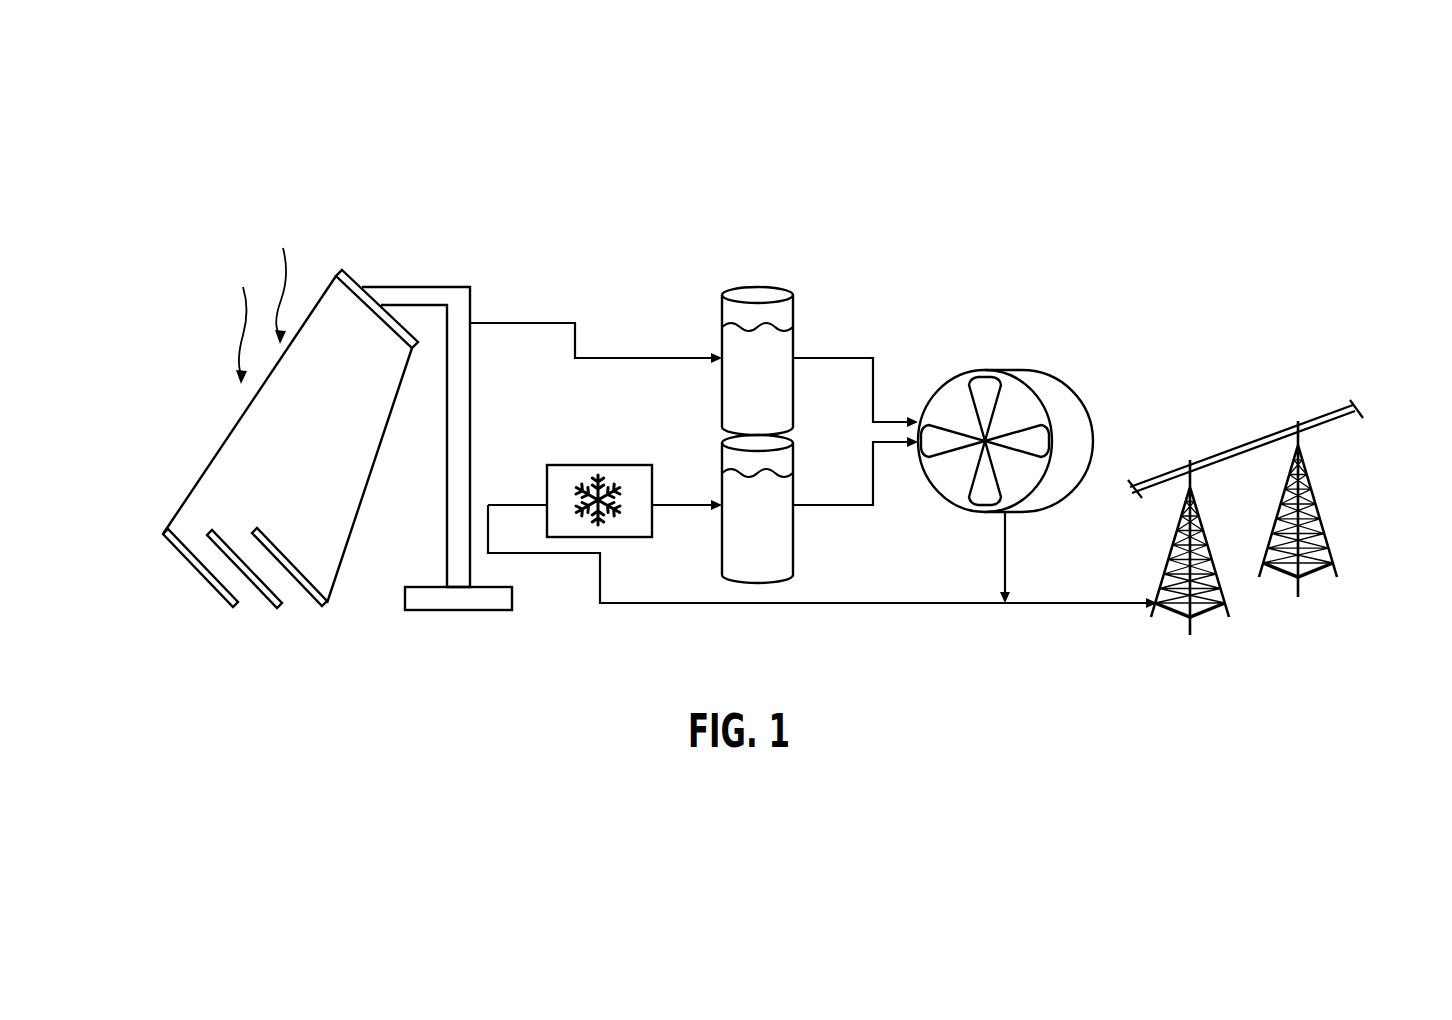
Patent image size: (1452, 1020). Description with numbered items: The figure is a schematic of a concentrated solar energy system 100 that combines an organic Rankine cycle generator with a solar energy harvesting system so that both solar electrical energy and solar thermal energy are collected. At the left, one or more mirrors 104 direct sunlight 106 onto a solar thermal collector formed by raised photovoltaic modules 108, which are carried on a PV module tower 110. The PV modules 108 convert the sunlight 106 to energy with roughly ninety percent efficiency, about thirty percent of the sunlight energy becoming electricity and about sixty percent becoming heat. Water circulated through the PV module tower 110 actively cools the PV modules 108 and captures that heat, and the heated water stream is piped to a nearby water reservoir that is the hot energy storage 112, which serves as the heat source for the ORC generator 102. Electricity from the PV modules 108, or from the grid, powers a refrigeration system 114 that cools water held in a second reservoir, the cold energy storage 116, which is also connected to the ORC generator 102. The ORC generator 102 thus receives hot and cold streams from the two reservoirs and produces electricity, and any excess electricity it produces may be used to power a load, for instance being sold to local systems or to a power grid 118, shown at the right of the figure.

The system 100 is at (1326, 174).
The ORC generator 102 is at (998, 370).
The mirrors 104 is at (281, 608).
The sunlight 106 is at (243, 333).
The photovoltaic modules 108 is at (340, 268).
The PV module tower 110 is at (470, 423).
The hot energy storage 112 is at (795, 390).
The refrigeration system 114 is at (595, 464).
The cold energy storage 116 is at (795, 543).
The power grid 118 is at (1318, 520).